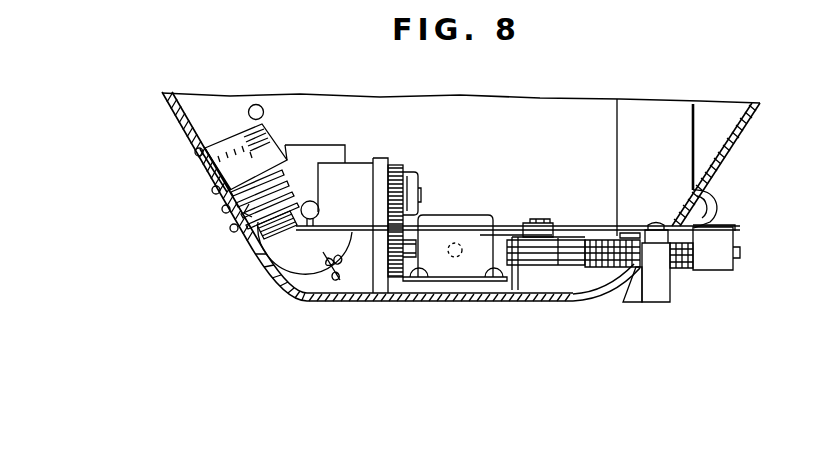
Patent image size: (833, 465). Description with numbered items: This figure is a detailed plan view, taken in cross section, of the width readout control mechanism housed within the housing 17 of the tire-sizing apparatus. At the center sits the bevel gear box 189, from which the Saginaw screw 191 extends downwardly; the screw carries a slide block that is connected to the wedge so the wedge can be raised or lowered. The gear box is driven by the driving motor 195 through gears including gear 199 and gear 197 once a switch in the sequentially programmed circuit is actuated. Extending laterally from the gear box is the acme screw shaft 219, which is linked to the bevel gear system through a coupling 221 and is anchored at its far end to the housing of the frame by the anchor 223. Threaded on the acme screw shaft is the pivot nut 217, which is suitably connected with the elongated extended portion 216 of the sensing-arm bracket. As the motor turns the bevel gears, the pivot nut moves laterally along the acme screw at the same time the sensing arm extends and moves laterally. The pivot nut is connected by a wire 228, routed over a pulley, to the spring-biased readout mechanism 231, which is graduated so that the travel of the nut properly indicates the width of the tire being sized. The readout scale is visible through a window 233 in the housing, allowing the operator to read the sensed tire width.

The housing 17 is at (333, 298).
The bevel gear box 189 is at (472, 215).
The Saginaw screw 191 is at (458, 257).
The driving motor 195 is at (278, 243).
The pinion gear 197 is at (394, 279).
The gear 199 is at (399, 166).
The elongated extended portion 216 is at (622, 142).
The pivot nut 217 is at (653, 280).
The acme screw shaft 219 is at (697, 263).
The coupling 221 is at (541, 262).
The anchor 223 is at (728, 242).
The wire 228 is at (581, 229).
The spring-biased readout mechanism 231 is at (207, 147).
The window 233 is at (202, 152).